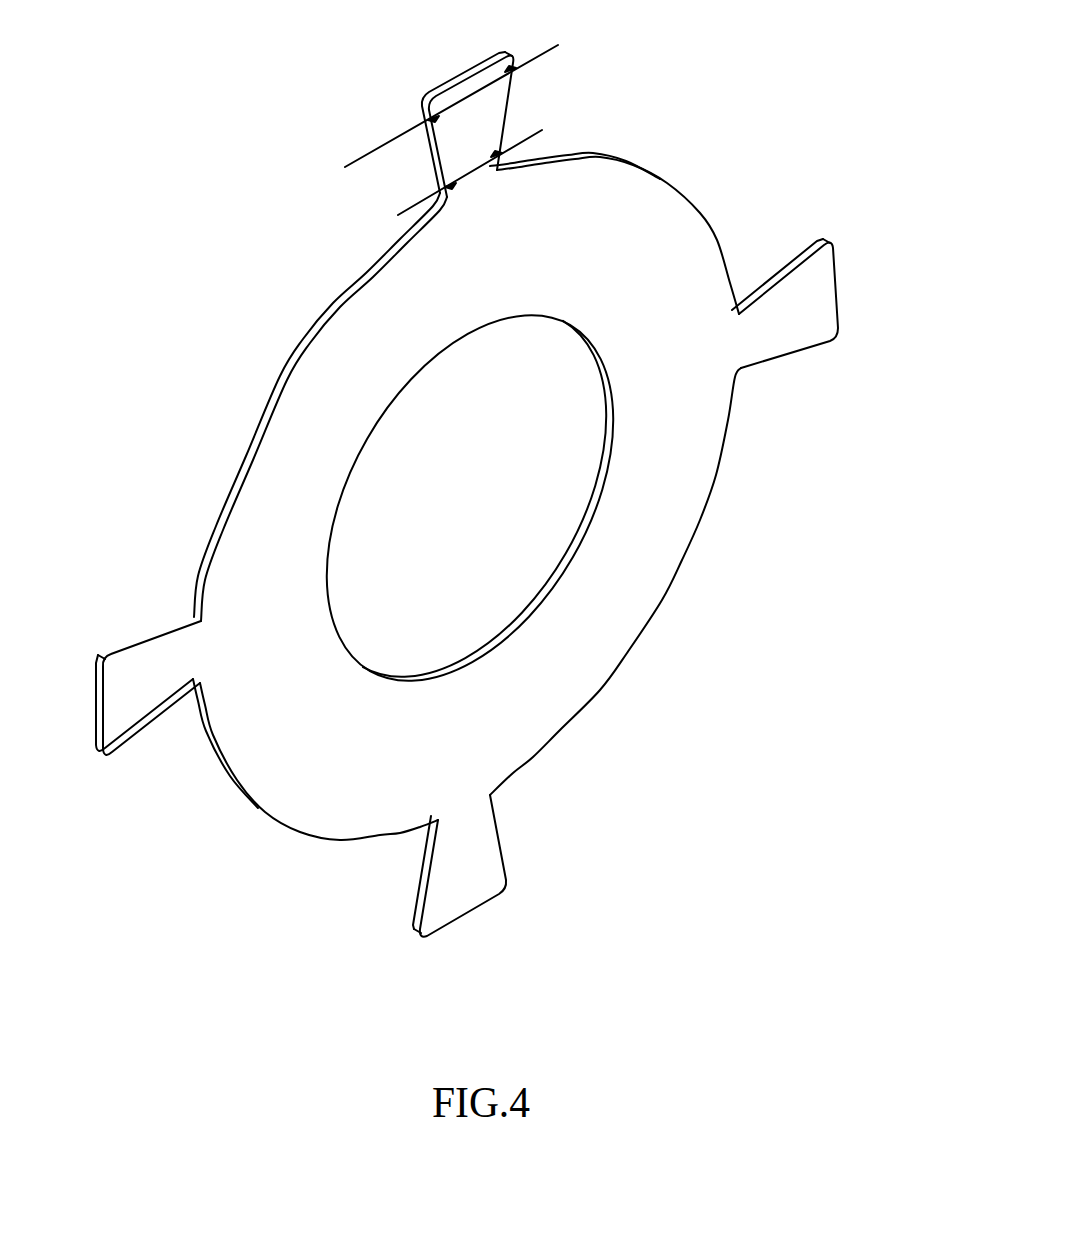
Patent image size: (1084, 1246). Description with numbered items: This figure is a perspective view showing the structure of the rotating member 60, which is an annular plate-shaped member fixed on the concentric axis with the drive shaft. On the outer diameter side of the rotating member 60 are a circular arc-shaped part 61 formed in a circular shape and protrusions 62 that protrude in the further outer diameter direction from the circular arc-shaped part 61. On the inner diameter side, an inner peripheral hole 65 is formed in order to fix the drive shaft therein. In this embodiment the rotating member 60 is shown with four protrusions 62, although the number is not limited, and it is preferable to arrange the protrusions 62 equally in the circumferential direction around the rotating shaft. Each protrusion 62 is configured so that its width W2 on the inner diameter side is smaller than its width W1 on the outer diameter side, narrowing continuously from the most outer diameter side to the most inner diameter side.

The rotating member 60 is at (498, 483).
The circular arc-shaped part 61 is at (590, 152).
The protrusion 62 is at (830, 228).
The inner peripheral hole 65 is at (582, 518).
The width on the outer diameter side W1 is at (441, 106).
The width on the inner diameter side W2 is at (452, 173).